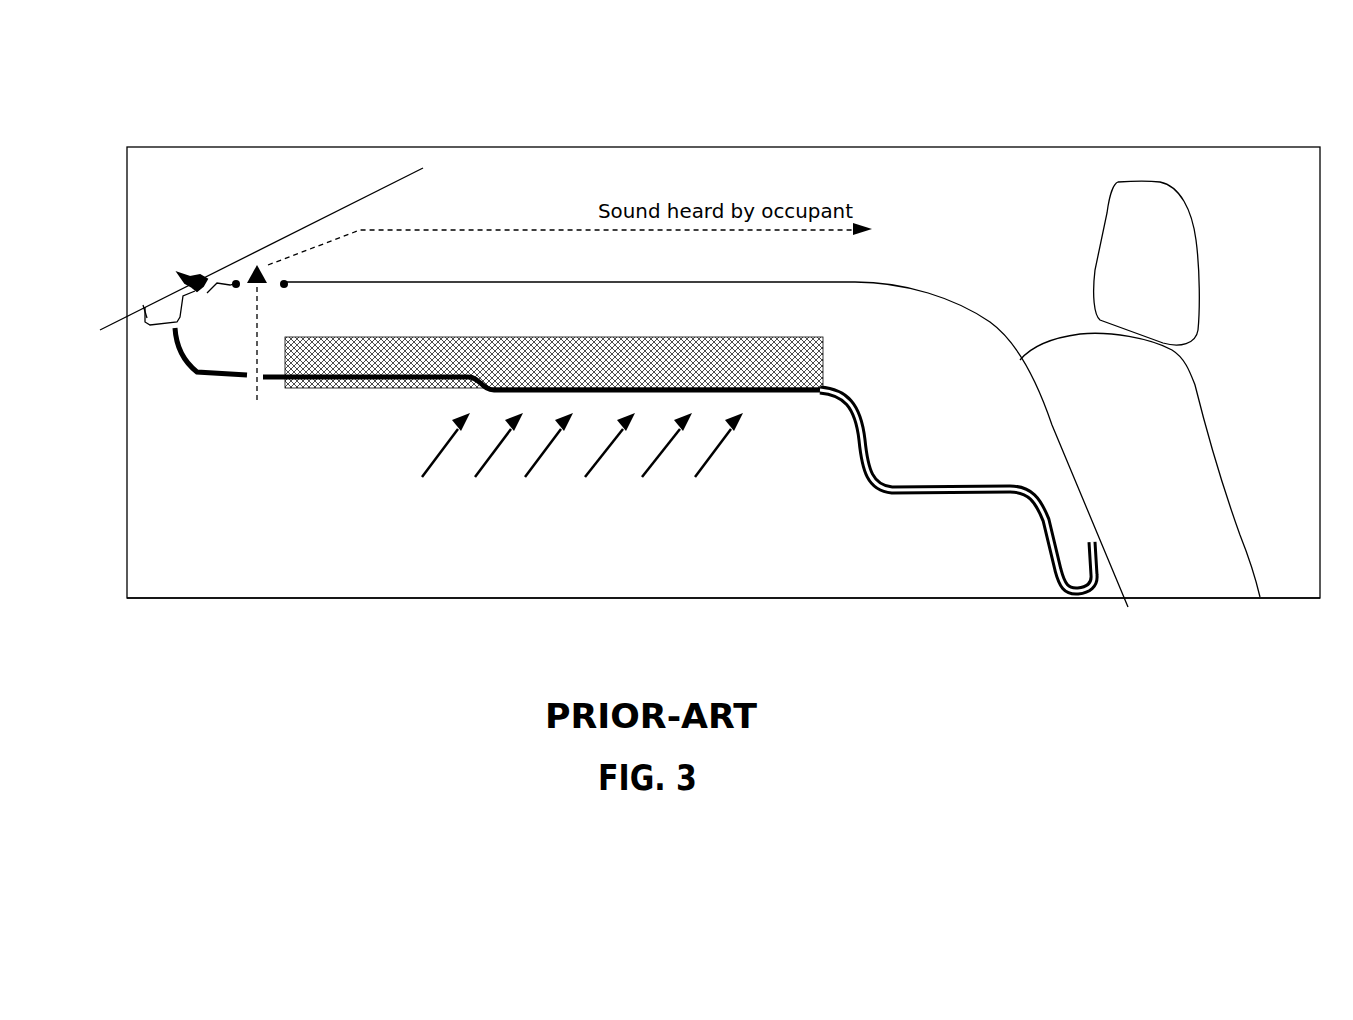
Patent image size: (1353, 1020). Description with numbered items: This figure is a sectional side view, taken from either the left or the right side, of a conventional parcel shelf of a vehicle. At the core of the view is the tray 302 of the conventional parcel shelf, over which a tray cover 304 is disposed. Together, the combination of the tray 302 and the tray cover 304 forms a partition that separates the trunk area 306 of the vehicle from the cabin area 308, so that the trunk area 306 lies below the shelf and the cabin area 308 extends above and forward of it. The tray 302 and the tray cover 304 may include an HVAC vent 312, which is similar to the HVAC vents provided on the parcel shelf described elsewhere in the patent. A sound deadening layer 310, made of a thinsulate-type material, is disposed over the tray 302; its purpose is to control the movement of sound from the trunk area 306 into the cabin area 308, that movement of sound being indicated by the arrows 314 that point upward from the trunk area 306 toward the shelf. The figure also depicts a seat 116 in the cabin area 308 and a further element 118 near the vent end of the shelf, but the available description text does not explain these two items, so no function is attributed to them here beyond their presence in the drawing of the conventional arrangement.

The seat headrest 116 is at (1167, 182).
The side view mirror 118 is at (222, 265).
The tray 302 is at (977, 495).
The tray cover 304 is at (928, 288).
The trunk area 306 is at (547, 558).
The cabin area 308 is at (587, 183).
The sound deadening layer 310 is at (775, 357).
The HVAC vent 312 is at (245, 372).
The arrows 314 is at (707, 457).